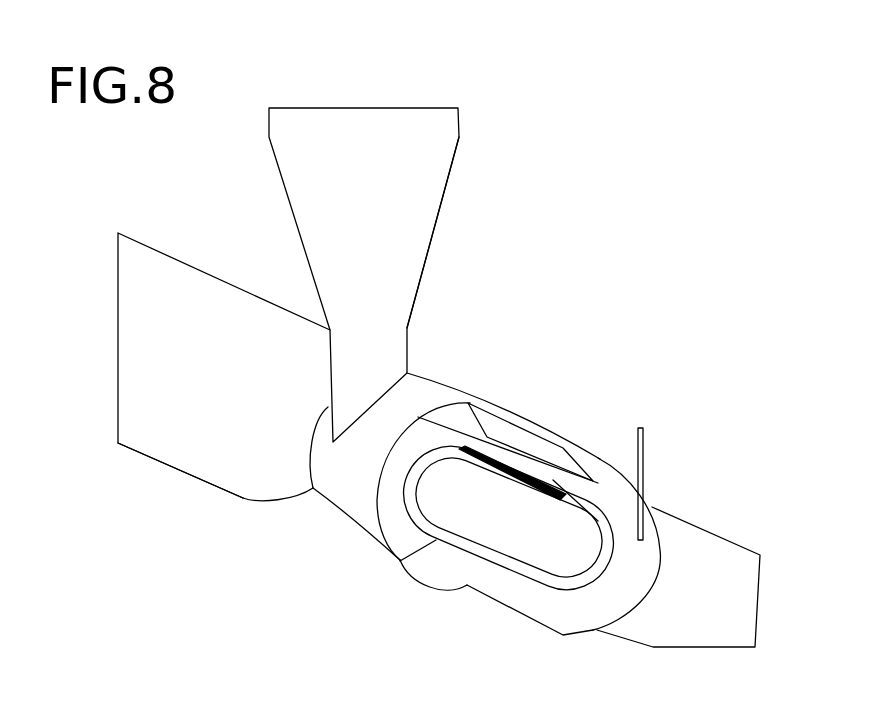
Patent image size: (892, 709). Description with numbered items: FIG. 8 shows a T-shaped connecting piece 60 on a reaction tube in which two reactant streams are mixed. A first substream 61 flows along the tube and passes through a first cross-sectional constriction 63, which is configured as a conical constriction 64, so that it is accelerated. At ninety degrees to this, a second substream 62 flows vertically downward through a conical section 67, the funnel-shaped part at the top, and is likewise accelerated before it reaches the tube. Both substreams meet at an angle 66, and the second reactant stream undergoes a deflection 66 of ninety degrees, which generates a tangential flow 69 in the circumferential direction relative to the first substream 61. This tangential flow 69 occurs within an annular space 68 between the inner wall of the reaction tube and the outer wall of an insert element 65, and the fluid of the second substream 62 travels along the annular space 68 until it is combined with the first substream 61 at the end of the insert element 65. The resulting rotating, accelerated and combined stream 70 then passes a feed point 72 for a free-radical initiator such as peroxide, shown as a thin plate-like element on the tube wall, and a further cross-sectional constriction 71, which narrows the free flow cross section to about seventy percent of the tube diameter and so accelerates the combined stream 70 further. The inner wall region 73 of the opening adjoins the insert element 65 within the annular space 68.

The blade body 60 is at (268, 254).
The first substream 61 is at (103, 379).
The second substream 62 is at (366, 106).
The first cross-sectional constriction 63 is at (270, 477).
The conical constriction 64 is at (208, 518).
The insert element 65 is at (518, 465).
The angle / deflection 66 is at (368, 527).
The conical section 67 is at (426, 274).
The annular space 68 is at (505, 432).
The tangential flow 69 is at (445, 423).
The combined stream 70 is at (489, 610).
The cross-sectional constriction 71 is at (590, 634).
The feed point for the free-radical initiator 72 is at (645, 457).
The inner wall 73 is at (597, 500).